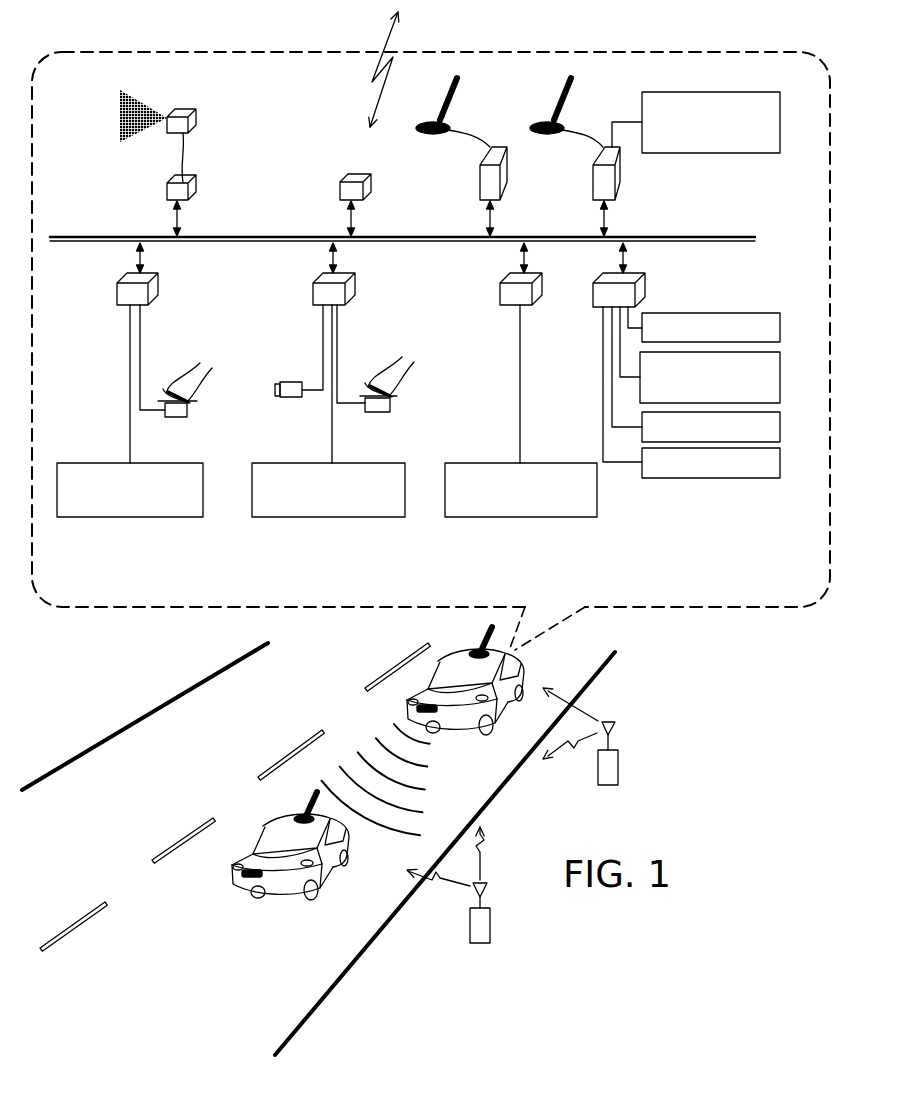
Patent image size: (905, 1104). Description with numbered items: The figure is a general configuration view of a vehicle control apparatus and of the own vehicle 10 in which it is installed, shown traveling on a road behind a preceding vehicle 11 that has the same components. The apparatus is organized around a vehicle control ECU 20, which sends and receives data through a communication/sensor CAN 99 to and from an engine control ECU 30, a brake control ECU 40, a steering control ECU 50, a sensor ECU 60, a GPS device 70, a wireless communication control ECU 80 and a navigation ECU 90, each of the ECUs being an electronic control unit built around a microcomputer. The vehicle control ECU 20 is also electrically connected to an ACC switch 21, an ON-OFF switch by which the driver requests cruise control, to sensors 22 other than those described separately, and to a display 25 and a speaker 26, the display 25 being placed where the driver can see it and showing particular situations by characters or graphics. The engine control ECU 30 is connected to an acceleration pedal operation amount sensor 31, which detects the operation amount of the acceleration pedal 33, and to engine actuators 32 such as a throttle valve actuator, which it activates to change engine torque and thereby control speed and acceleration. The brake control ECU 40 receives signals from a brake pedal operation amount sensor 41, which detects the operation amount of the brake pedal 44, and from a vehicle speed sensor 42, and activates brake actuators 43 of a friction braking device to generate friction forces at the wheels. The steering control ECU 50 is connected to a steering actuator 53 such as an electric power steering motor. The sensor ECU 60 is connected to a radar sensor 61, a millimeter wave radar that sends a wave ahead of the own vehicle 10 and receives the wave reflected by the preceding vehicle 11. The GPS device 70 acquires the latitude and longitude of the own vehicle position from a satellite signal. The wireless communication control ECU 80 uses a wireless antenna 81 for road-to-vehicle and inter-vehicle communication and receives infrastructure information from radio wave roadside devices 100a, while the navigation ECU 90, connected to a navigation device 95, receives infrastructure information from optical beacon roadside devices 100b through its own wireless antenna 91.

The own vehicle 10 is at (500, 697).
The preceding vehicle 11 is at (322, 874).
The vehicle control ECU 20 is at (636, 280).
The ACC switch 21 is at (781, 330).
The sensors 22 is at (781, 380).
The display 25 is at (781, 429).
The speaker 26 is at (781, 463).
The engine control ECU 30 is at (155, 276).
The acceleration pedal operation amount sensor 31 is at (177, 418).
The engine actuators 32 is at (118, 518).
The acceleration pedal 33 is at (167, 385).
The brake control ECU 40 is at (347, 280).
The brake pedal operation amount sensor 41 is at (378, 413).
The vehicle speed sensor 42 is at (276, 390).
The brake actuators 43 is at (330, 518).
The brake pedal 44 is at (369, 381).
The steering control ECU 50 is at (535, 280).
The steering actuator 53 is at (540, 518).
The sensor ECU 60 is at (192, 178).
The radar sensor 61 is at (178, 110).
The GPS device 70 is at (353, 178).
The wireless communication control ECU 80 is at (505, 172).
The wireless antenna 81 is at (452, 99).
The navigation ECU 90 is at (620, 172).
The wireless antenna 91 is at (566, 99).
The navigation device 95 is at (781, 122).
The communication/sensor CAN 99 is at (308, 236).
The radio wave roadside devices 100a is at (618, 775).
The optical beacon roadside devices 100b is at (490, 935).